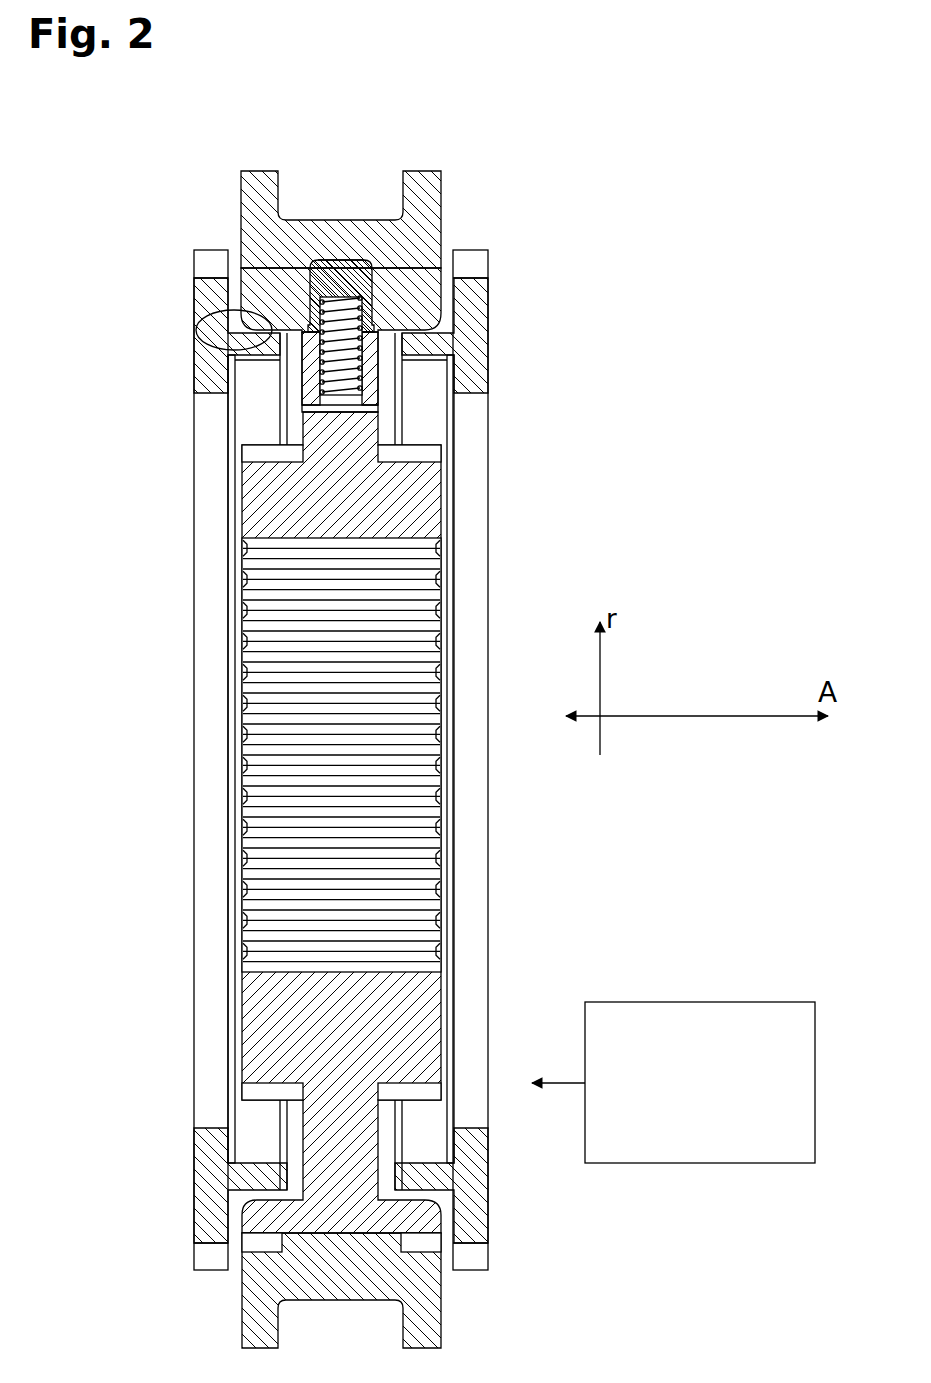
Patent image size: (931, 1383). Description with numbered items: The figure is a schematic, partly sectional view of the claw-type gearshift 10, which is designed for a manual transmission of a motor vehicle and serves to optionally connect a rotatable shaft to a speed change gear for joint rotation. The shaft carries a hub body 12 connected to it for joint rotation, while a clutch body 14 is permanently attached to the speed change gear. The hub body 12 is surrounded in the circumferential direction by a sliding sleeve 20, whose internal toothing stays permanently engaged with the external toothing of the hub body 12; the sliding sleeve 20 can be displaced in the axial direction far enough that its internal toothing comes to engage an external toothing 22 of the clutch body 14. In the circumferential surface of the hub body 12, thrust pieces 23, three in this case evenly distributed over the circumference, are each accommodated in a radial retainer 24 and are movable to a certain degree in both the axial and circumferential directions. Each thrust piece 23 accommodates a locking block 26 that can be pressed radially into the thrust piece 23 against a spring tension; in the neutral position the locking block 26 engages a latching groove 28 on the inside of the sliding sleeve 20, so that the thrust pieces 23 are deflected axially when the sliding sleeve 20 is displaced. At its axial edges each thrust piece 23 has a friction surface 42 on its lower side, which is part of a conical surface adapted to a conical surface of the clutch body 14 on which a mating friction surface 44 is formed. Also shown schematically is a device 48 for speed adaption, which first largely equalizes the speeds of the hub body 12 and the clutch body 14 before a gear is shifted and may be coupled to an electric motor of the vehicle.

The claw-type gearshift 10 is at (174, 186).
The hub body 12 is at (292, 386).
The clutch body 14 is at (213, 303).
The sliding sleeve 20 is at (436, 198).
The external toothing 22 is at (485, 265).
The thrust piece 23 is at (427, 296).
The radial retainer 24 is at (305, 408).
The locking block 26 is at (353, 272).
The latching groove 28 is at (341, 260).
The friction surface 42 is at (272, 337).
The mating friction surface 44 is at (205, 350).
The device for speed adaption 48 is at (680, 1002).